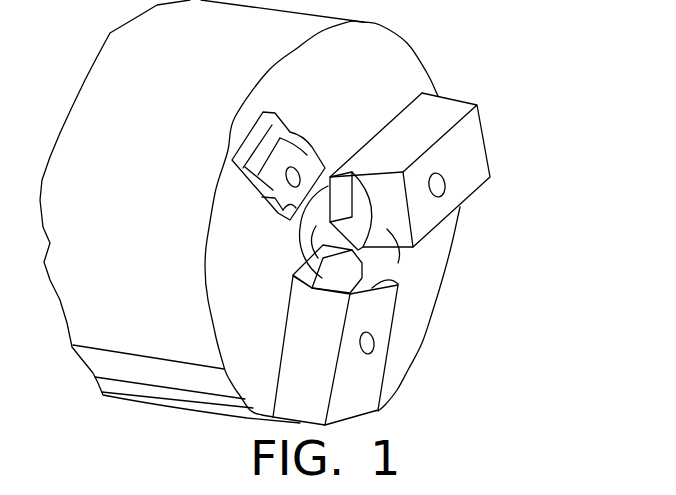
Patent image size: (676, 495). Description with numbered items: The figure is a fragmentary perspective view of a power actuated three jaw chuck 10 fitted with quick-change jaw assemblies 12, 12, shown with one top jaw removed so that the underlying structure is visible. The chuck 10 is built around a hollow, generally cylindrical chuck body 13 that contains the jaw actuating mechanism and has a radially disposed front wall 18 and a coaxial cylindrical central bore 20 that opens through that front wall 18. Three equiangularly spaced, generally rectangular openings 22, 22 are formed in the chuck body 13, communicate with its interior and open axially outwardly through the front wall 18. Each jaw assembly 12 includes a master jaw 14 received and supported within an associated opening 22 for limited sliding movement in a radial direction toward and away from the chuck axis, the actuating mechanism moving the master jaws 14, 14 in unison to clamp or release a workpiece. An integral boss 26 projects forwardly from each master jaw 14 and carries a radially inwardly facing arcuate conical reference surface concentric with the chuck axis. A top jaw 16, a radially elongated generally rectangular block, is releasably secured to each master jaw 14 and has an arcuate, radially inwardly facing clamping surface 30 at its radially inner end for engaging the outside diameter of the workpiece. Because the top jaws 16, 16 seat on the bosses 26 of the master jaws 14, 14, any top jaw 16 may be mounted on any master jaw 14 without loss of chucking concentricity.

The power actuated three jaw chuck 10 is at (478, 56).
The quick-change jaw assembly 12 is at (488, 132).
The chuck body 13 is at (105, 345).
The master jaw 14 is at (294, 109).
The top jaw 16 is at (458, 178).
The front wall 18 is at (257, 378).
The central bore 20 is at (302, 252).
The rectangular opening 22 is at (300, 224).
The boss 26 is at (298, 143).
The clamping surface 30 is at (380, 273).